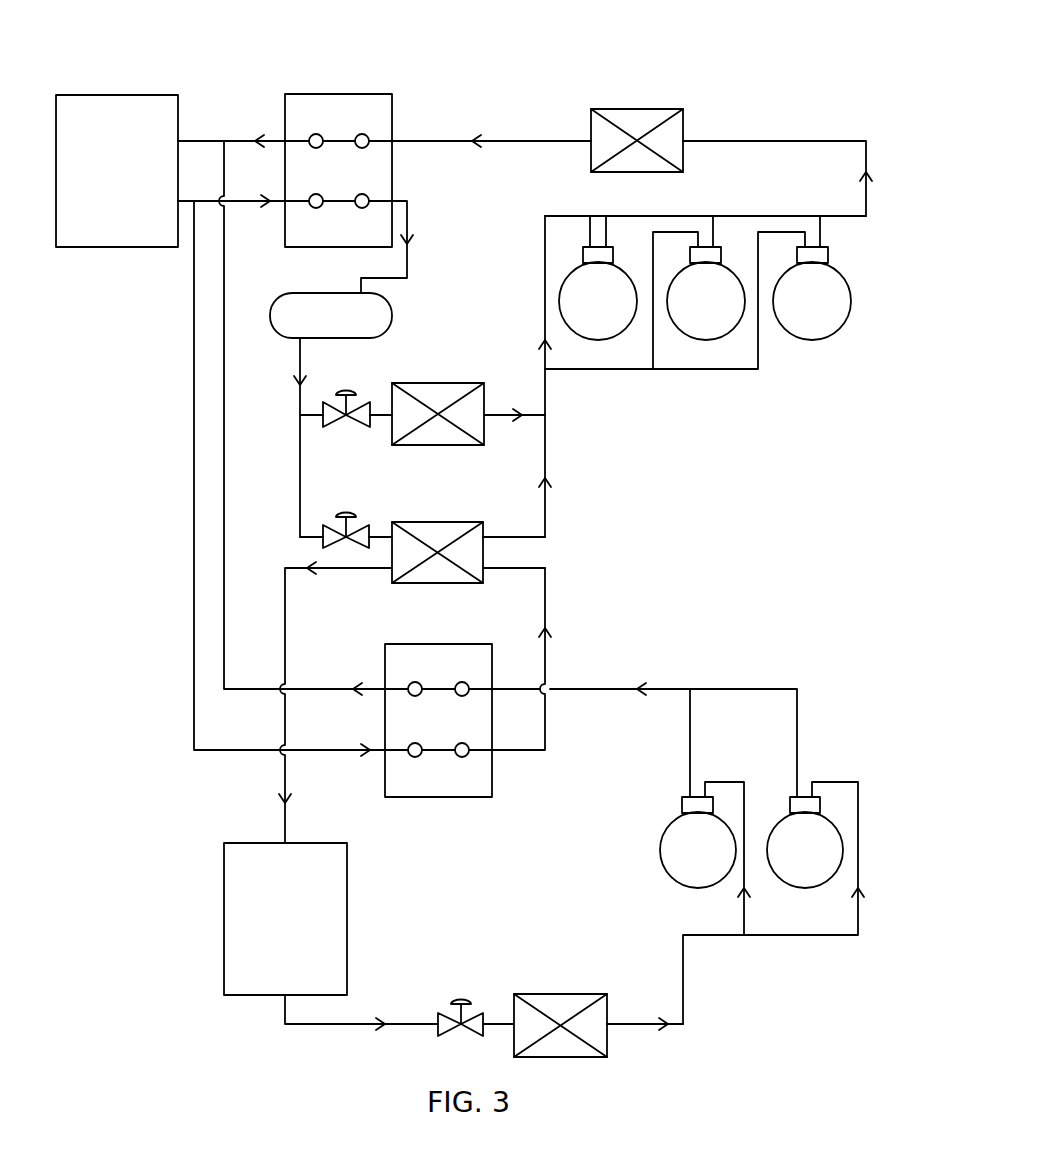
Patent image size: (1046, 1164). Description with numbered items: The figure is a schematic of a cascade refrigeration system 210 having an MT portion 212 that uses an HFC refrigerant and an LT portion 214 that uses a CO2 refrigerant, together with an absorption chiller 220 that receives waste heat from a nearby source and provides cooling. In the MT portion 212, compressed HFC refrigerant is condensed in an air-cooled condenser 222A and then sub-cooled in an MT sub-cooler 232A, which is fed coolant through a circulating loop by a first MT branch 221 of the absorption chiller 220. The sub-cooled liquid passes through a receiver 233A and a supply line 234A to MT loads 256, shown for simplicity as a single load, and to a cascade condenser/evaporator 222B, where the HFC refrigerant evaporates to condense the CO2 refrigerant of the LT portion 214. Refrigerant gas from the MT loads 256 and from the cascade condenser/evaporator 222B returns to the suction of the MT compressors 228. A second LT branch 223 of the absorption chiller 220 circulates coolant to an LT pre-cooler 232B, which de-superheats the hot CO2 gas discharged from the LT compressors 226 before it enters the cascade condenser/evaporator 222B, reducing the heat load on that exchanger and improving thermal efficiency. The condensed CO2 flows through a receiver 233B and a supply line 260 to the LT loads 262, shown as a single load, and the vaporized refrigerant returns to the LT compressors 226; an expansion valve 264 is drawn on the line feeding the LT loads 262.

The cascade refrigeration system 210 is at (786, 27).
The MT portion 212 is at (709, 339).
The LT portion 214 is at (678, 827).
The absorption chiller 220 is at (107, 94).
The first MT branch 221 is at (234, 207).
The air-cooled condenser 222A is at (683, 128).
The cascade condenser/evaporator 222B is at (483, 557).
The second LT branch 223 is at (194, 360).
The LT compressors 226 is at (663, 868).
The MT compressors 228 is at (837, 268).
The MT sub-cooler 232A is at (392, 104).
The LT pre-cooler 232B is at (492, 780).
The receiver 233A is at (392, 314).
The receiver 233B is at (224, 878).
The supply line 234A is at (302, 360).
The MT loads 256 is at (458, 383).
The supply line 260 is at (285, 1011).
The LT loads 262 is at (607, 1042).
The expansion valve 264 is at (440, 1013).